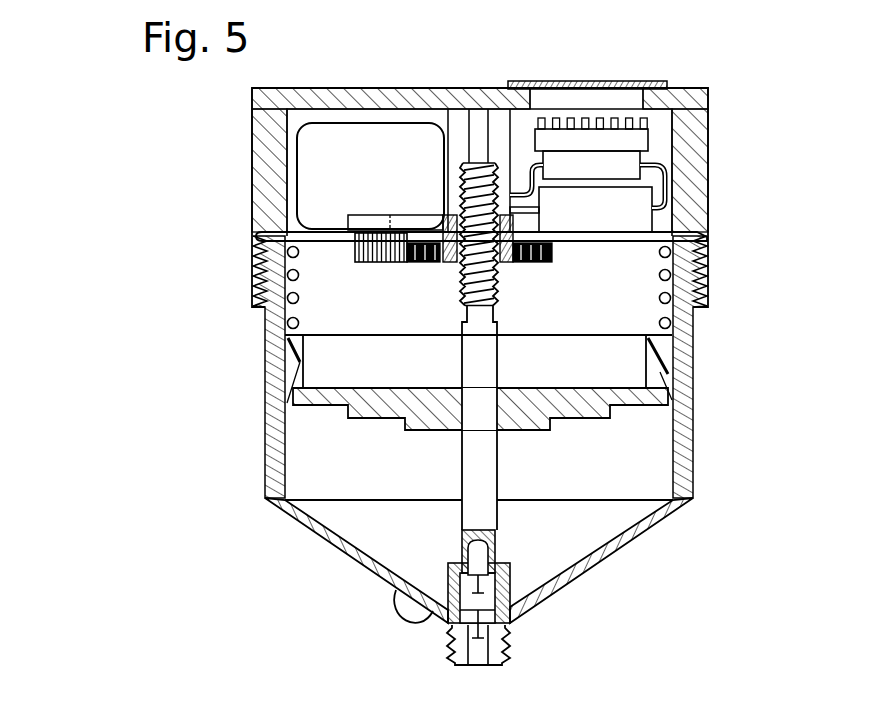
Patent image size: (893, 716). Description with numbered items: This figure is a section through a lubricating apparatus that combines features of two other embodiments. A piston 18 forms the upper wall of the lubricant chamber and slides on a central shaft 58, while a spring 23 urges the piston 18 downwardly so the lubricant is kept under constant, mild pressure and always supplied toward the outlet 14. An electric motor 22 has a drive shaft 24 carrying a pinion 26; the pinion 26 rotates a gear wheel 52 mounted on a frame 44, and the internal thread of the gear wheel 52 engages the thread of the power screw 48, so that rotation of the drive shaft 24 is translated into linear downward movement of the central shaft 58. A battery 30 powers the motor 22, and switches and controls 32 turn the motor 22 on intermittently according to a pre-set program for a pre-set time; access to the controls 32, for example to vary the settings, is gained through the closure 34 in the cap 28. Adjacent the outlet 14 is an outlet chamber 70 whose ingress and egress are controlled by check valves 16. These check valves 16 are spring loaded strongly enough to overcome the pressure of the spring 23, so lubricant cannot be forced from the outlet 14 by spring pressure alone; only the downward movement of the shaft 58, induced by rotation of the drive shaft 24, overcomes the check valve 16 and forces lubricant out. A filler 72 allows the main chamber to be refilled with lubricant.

The outlet 14 is at (452, 645).
The check valves 16 is at (452, 572).
The piston 18 is at (665, 378).
The motor 22 is at (375, 133).
The spring 23 is at (672, 330).
The drive shaft 24 is at (377, 223).
The pinion 26 is at (378, 263).
The cap 28 is at (707, 100).
The battery 30 is at (637, 223).
The switches and controls 32 is at (637, 140).
The closure 34 is at (557, 82).
The frame 44 is at (415, 220).
The power screw 48 is at (461, 281).
The gear wheel 52 is at (527, 263).
The central shaft 58 is at (462, 447).
The outlet chamber 70 is at (510, 610).
The filler 72 is at (400, 620).